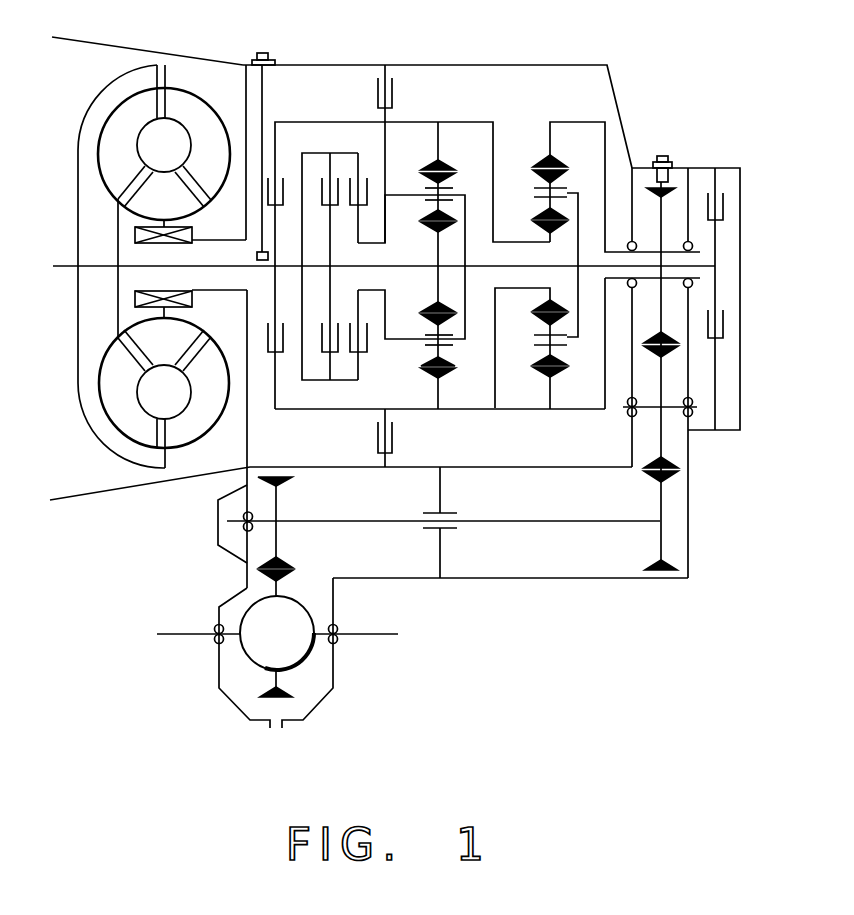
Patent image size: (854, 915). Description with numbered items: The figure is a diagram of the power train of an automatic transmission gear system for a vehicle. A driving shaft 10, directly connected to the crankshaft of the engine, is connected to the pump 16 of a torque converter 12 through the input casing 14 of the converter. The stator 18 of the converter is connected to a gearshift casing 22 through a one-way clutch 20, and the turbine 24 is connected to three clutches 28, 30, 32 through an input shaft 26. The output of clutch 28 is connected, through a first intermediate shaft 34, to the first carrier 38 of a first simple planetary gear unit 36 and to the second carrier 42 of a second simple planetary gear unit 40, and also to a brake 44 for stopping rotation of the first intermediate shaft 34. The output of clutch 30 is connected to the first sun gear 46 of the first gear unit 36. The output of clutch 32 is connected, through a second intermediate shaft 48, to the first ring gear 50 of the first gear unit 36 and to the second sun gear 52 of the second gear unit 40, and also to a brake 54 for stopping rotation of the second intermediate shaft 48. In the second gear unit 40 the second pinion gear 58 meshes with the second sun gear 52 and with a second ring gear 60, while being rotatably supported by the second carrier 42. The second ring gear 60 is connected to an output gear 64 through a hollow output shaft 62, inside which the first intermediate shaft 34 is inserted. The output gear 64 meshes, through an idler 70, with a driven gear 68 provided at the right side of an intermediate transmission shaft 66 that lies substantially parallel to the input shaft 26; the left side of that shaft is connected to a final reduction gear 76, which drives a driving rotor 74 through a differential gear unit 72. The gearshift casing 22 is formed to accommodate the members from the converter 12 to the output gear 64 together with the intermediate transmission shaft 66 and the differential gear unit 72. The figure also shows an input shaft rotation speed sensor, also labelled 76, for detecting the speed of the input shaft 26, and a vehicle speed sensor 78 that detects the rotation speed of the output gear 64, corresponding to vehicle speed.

The driving shaft 10 is at (60, 269).
The torque converter 12 is at (184, 76).
The input casing 14 is at (78, 160).
The pump 16 is at (218, 107).
The stator 18 is at (118, 193).
The one-way clutch 20 is at (135, 238).
The gearshift casing 22 is at (464, 63).
The turbine 24 is at (118, 97).
The input shaft 26 is at (228, 268).
The clutch 28 is at (366, 178).
The clutch 30 is at (343, 178).
The clutch 32 is at (287, 178).
The first intermediate shaft 34 is at (483, 270).
The first simple planetary gear unit 36 is at (447, 160).
The first carrier 38 is at (393, 195).
The second simple planetary gear unit 40 is at (548, 152).
The second carrier 42 is at (577, 190).
The brake 44 is at (725, 190).
The first sun gear 46 is at (428, 230).
The second intermediate shaft 48 is at (402, 121).
The first ring gear 50 is at (437, 160).
The second sun gear 52 is at (540, 228).
The brake 54 is at (378, 92).
The second pinion gear 58 is at (540, 178).
The second ring gear 60 is at (536, 163).
The hollow output shaft 62 is at (619, 243).
The output gear 64 is at (673, 184).
The intermediate transmission shaft 66 is at (527, 522).
The driven gear 68 is at (653, 478).
The idler 70 is at (657, 458).
The differential gear unit 72 is at (262, 648).
The driving rotor 74 is at (170, 640).
The final reduction gear 76 is at (262, 52).
The vehicle speed sensor 78 is at (662, 155).